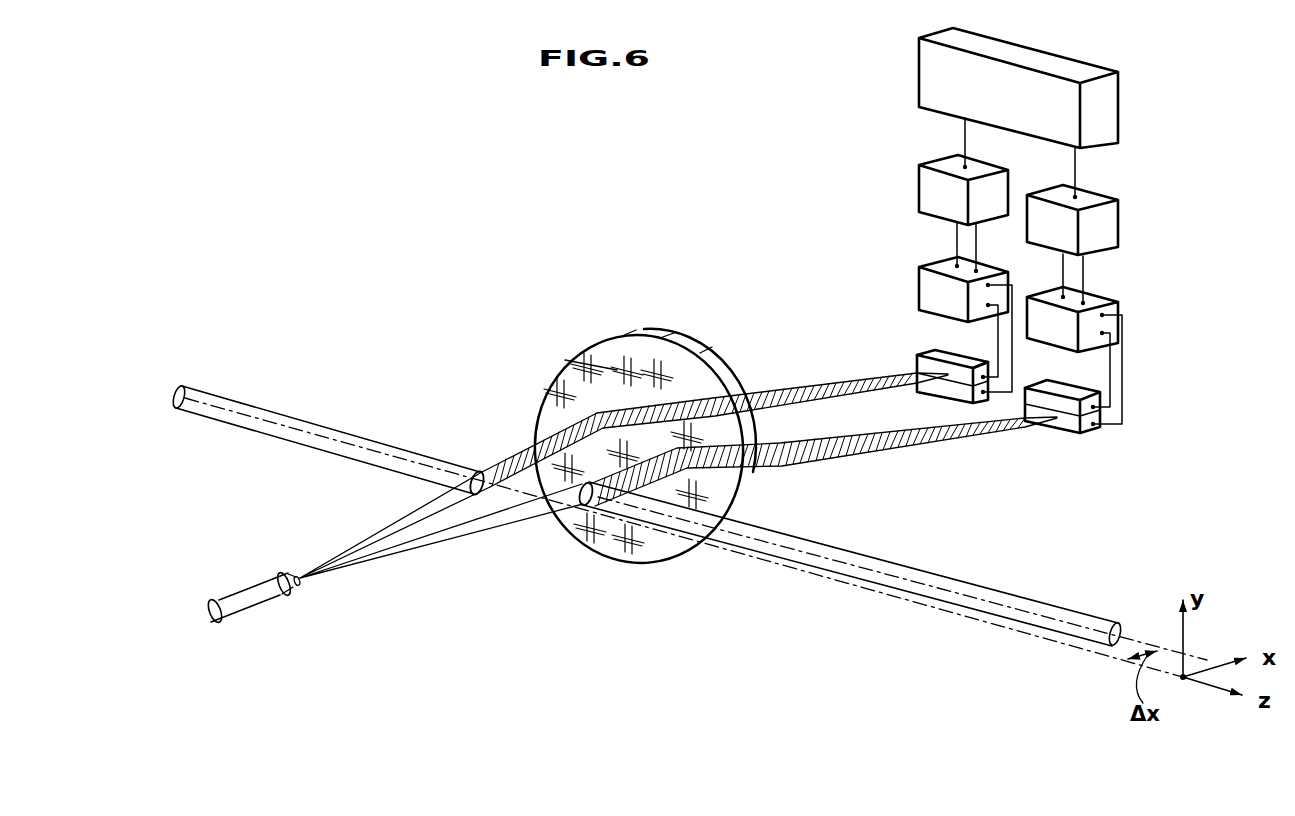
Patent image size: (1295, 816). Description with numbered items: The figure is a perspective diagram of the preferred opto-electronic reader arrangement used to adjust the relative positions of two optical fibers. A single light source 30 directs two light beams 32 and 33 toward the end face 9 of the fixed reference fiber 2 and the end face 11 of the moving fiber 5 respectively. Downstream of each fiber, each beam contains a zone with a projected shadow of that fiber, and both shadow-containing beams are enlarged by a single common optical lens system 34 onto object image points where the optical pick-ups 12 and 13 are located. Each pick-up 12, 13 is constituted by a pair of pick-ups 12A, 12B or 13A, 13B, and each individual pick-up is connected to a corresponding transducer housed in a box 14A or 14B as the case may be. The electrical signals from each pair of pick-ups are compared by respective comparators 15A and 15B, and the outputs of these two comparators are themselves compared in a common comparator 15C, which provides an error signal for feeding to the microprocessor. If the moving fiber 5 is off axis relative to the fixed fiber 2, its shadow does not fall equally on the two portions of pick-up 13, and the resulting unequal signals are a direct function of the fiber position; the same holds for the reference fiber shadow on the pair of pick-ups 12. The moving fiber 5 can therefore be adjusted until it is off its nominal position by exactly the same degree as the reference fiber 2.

The first fiber 2 is at (363, 447).
The moving fiber 5 is at (905, 577).
The end face of the first fiber 9 is at (480, 470).
The end face of the moving fiber 11 is at (575, 494).
The pick-up 12 is at (917, 370).
The pick-up 12A is at (940, 390).
The pick-up 12B is at (933, 354).
The pick-up 13 is at (1052, 440).
The pick-up 13A is at (1068, 425).
The pick-up 13B is at (1092, 422).
The transducer box 14A is at (935, 283).
The transducer box 14B is at (1100, 302).
The comparator 15A is at (937, 180).
The comparator 15B is at (1103, 228).
The comparator 15C is at (1088, 73).
The light source 30 is at (258, 585).
The light beam 32 is at (370, 535).
The light beam 33 is at (423, 545).
The optical lens system 34 is at (552, 393).